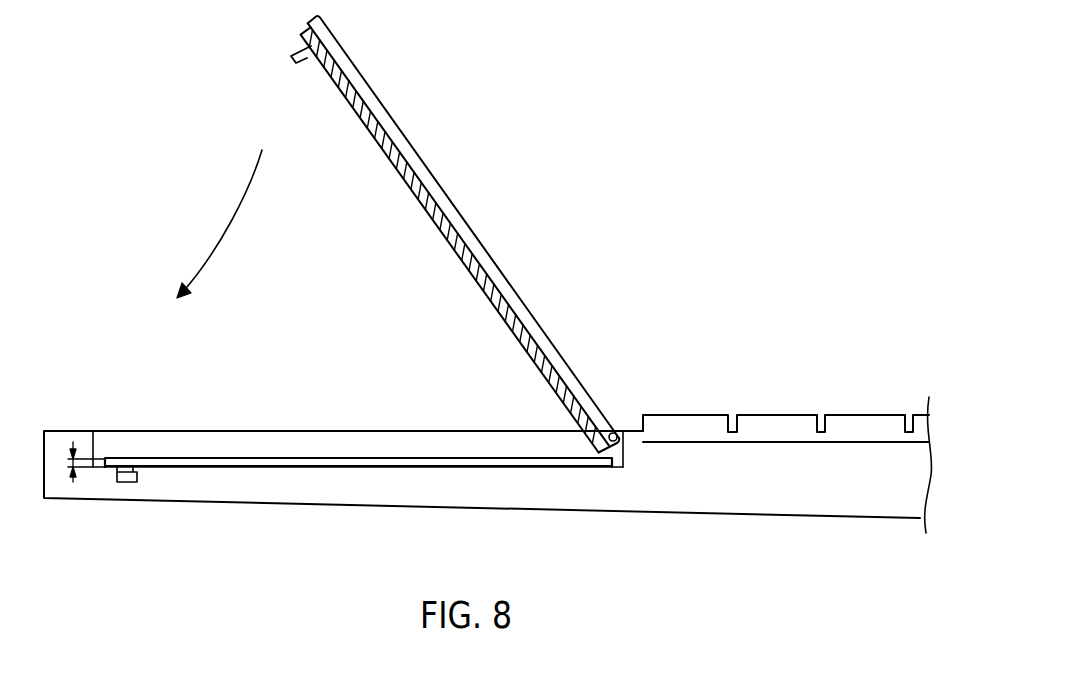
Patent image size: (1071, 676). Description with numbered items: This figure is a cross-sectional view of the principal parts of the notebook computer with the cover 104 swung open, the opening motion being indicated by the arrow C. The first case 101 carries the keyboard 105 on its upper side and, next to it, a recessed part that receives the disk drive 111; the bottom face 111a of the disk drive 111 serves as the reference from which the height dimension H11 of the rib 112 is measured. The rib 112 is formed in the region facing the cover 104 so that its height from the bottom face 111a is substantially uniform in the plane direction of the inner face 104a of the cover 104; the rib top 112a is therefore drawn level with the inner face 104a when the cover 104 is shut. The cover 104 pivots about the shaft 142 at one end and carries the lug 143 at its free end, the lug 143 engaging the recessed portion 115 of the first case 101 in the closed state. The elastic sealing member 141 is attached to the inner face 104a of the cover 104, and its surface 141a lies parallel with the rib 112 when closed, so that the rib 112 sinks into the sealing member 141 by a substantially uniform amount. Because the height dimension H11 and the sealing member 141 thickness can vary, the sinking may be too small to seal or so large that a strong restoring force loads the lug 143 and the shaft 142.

The first case 101 is at (770, 492).
The keyboard 105 is at (781, 428).
The disk drive 111 is at (288, 440).
The bottom face of the disk drive 111a is at (423, 465).
The rib 112 is at (212, 458).
The recess wall 112a is at (342, 457).
The recessed portion 115 is at (128, 484).
The height dimension of the rib H11 is at (78, 459).
The cover 104 is at (461, 228).
The inner face of the cover 104a is at (417, 177).
The sealing member 141 is at (394, 166).
The surface of the sealing member 141a is at (474, 281).
The shaft 142 is at (616, 430).
The lug 143 is at (290, 63).
The opening direction C is at (198, 216).